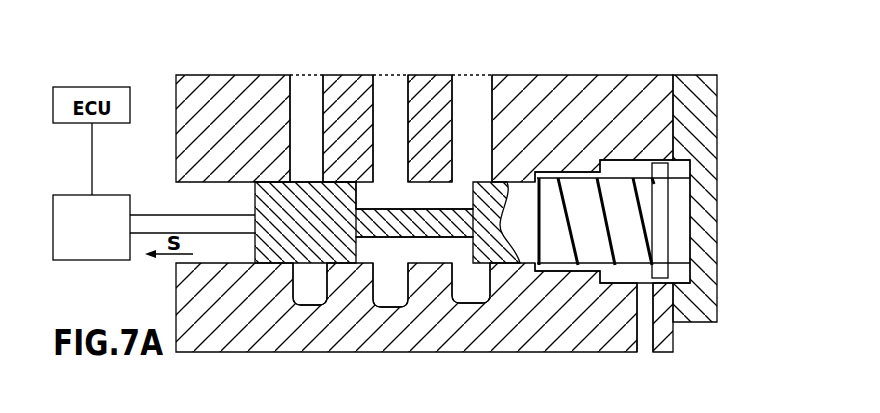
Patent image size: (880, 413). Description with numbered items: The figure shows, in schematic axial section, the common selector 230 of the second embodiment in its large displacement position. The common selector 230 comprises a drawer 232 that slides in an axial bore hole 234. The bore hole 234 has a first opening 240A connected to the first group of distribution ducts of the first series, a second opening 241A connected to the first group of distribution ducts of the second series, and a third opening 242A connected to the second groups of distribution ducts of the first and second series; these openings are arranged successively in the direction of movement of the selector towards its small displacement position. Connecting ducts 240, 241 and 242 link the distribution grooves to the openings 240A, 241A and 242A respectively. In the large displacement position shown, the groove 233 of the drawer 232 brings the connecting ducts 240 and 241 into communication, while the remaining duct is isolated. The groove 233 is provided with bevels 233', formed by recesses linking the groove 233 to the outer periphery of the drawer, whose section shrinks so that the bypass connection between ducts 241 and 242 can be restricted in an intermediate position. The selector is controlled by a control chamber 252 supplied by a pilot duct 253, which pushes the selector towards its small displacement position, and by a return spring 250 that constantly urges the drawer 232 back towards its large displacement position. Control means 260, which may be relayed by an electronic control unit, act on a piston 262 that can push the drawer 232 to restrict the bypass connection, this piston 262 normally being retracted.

The common selector 230 is at (511, 126).
The drawer 232 is at (250, 255).
The groove 233 is at (414, 235).
The bevels 233' is at (334, 195).
The axial bore hole 234 is at (538, 264).
The connecting duct 240 is at (470, 112).
The connecting duct 241 is at (392, 112).
The connecting duct 242 is at (310, 112).
The first opening 240A is at (470, 303).
The second opening 241A is at (390, 302).
The third opening 242A is at (310, 301).
The return spring 250 is at (572, 198).
The control chamber 252 is at (682, 272).
The pilot duct 253 is at (643, 332).
The control means 260 is at (77, 238).
The piston 262 is at (154, 221).